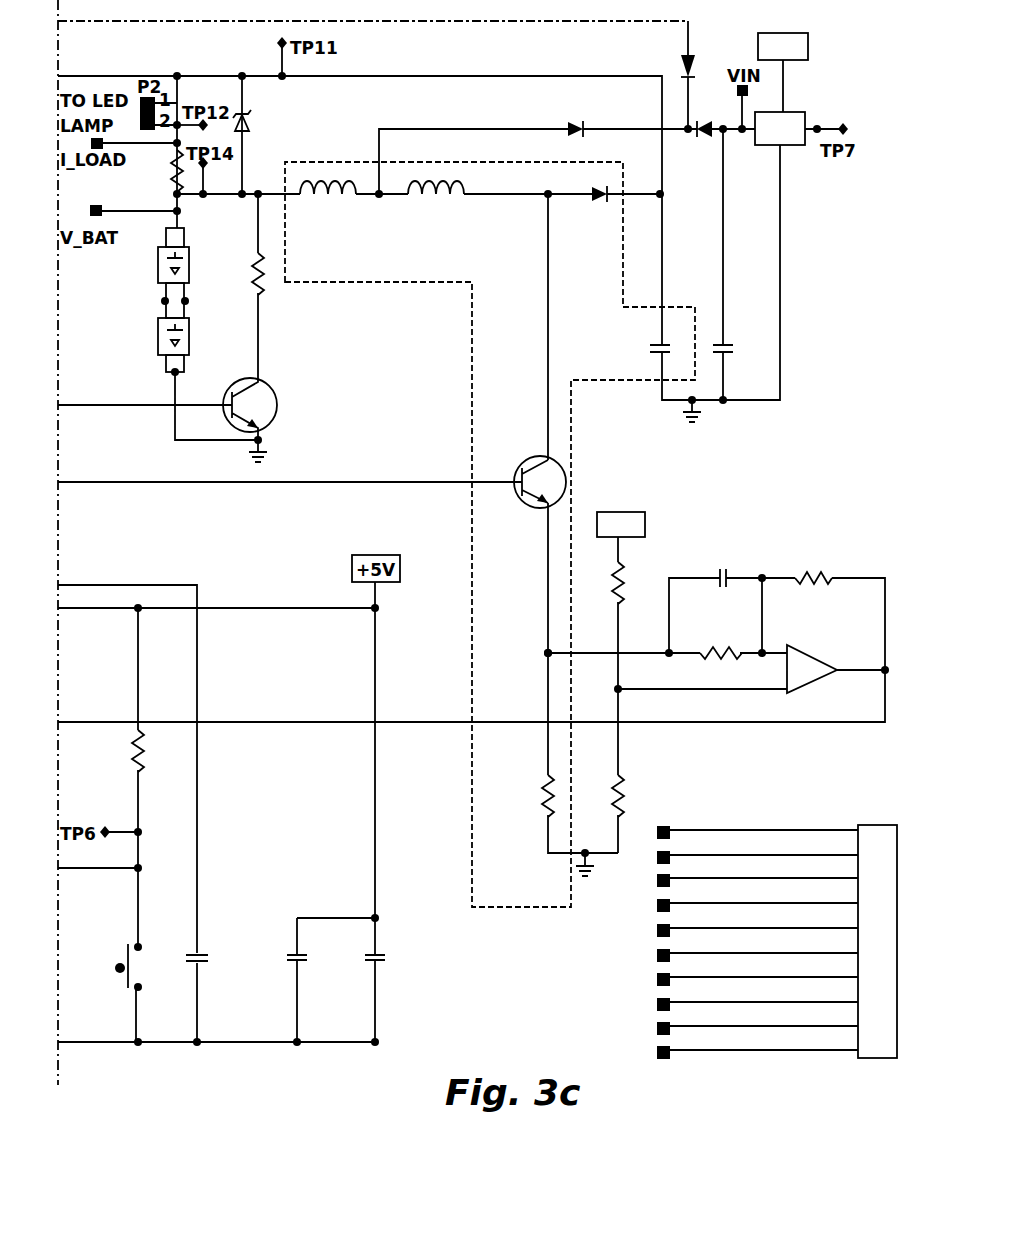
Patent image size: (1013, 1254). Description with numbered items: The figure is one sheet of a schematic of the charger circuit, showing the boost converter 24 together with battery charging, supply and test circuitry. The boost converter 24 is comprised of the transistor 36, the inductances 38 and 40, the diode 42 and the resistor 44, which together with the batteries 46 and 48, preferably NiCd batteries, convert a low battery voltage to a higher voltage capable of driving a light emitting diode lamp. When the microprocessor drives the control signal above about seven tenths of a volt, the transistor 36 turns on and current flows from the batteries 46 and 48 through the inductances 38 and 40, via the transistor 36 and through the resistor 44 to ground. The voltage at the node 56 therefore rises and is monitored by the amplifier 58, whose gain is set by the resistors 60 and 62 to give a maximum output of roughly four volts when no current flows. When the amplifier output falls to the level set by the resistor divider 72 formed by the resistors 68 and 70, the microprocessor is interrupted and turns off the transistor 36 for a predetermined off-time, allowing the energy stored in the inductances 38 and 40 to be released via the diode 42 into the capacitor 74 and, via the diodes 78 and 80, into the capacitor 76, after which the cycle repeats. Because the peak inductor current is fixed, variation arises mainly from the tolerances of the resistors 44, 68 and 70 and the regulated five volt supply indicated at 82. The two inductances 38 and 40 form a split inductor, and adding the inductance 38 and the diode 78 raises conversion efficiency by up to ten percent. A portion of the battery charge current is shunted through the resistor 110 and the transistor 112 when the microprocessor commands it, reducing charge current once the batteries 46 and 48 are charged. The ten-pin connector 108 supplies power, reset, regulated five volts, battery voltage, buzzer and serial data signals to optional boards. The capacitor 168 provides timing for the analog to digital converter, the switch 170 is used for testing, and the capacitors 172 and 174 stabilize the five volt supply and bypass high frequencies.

The boost converter 24 is at (374, 288).
The transistor 36 is at (538, 455).
The inductance 38 is at (329, 176).
The inductance 40 is at (439, 199).
The diode 42 is at (600, 207).
The resistor 44 is at (532, 808).
The battery 46 is at (152, 338).
The battery 48 is at (152, 266).
The voltage point 56 is at (538, 650).
The amplifier 58 is at (814, 654).
The resistor 60 is at (811, 560).
The resistor 62 is at (710, 643).
The resistor 68 is at (638, 559).
The resistor 70 is at (640, 782).
The resistor divider 72 is at (630, 693).
The capacitor 74 is at (795, 108).
The capacitor 76 is at (729, 340).
The diode 78 is at (568, 118).
The diode 80 is at (702, 142).
The five volt power supply voltage 82 is at (792, 34).
The ten-pin connector 108 is at (754, 800).
The resistor 110 is at (268, 297).
The transistor 112 is at (274, 426).
The capacitor 168 is at (205, 947).
The switch 170 is at (112, 964).
The capacitor 172 is at (282, 944).
The capacitor 174 is at (382, 966).